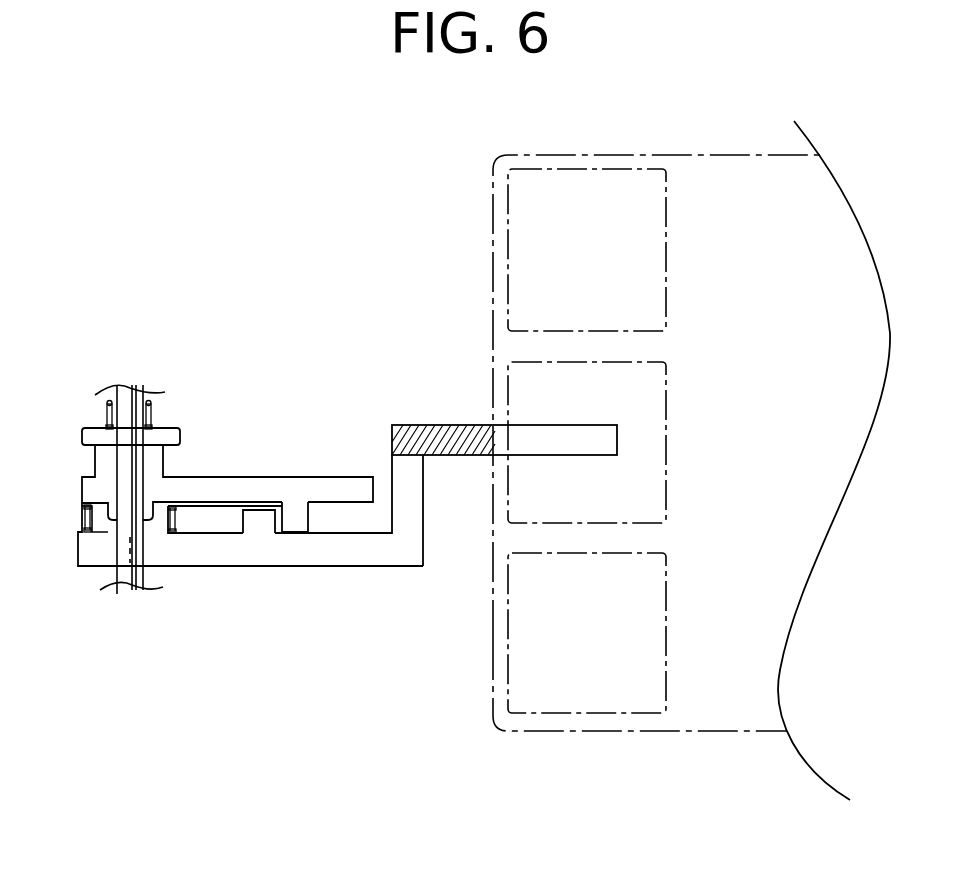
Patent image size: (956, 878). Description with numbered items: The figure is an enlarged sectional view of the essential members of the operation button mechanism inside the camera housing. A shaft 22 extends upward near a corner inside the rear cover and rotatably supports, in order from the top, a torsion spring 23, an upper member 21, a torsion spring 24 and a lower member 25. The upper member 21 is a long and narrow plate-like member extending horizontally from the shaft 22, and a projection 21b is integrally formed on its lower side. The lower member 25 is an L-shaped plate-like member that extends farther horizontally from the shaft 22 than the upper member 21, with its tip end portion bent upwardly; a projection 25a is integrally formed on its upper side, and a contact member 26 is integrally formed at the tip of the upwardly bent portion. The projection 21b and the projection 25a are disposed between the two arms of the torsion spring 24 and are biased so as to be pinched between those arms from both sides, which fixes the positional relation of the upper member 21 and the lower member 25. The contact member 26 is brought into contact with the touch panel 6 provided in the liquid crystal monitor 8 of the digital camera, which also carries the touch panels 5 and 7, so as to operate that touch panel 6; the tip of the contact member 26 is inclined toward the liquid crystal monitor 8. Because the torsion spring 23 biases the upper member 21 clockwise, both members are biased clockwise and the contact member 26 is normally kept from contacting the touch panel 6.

The touch panel 5 is at (542, 245).
The touch panel 6 is at (538, 505).
The touch panel 7 is at (573, 683).
The liquid crystal monitor 8 is at (730, 685).
The upper member 21 is at (328, 490).
The projection 21b is at (298, 528).
The shaft 22 is at (115, 578).
The torsion spring 23 is at (105, 402).
The torsion spring 24 is at (88, 520).
The lower member 25 is at (178, 558).
The projection 25a is at (252, 522).
The contact member 26 is at (500, 427).